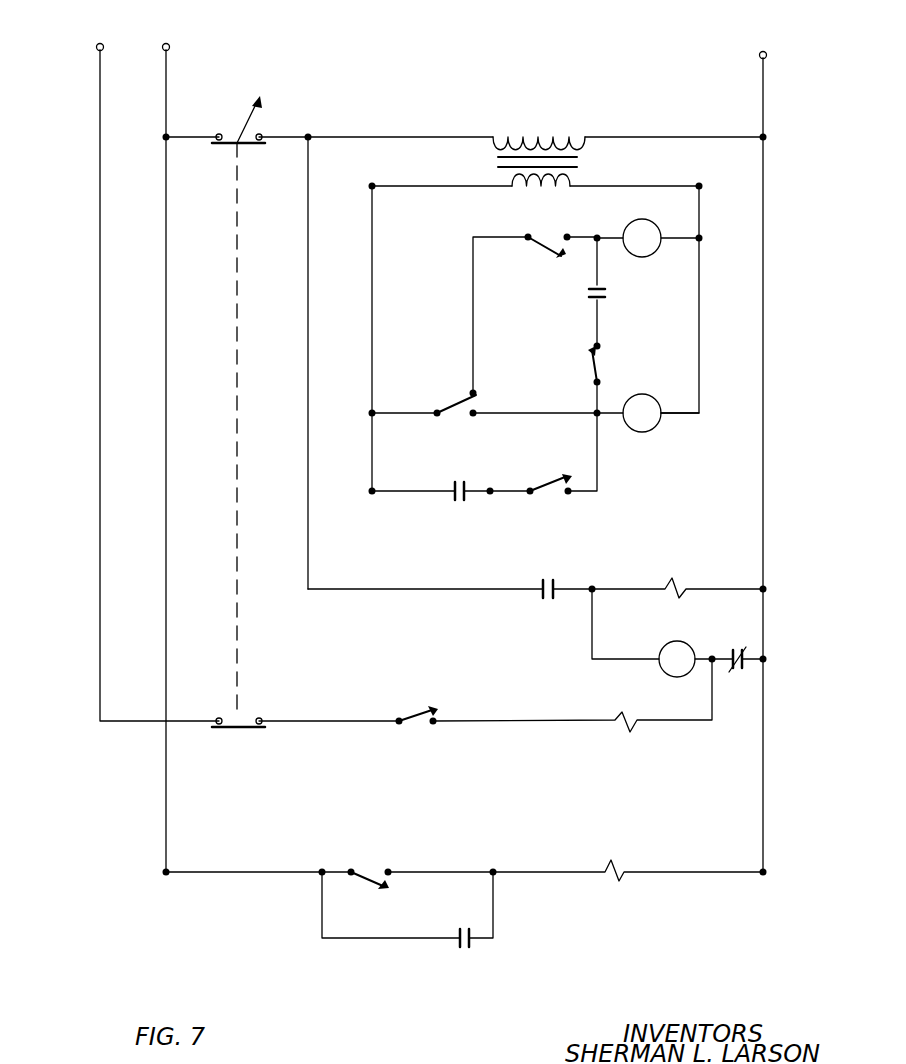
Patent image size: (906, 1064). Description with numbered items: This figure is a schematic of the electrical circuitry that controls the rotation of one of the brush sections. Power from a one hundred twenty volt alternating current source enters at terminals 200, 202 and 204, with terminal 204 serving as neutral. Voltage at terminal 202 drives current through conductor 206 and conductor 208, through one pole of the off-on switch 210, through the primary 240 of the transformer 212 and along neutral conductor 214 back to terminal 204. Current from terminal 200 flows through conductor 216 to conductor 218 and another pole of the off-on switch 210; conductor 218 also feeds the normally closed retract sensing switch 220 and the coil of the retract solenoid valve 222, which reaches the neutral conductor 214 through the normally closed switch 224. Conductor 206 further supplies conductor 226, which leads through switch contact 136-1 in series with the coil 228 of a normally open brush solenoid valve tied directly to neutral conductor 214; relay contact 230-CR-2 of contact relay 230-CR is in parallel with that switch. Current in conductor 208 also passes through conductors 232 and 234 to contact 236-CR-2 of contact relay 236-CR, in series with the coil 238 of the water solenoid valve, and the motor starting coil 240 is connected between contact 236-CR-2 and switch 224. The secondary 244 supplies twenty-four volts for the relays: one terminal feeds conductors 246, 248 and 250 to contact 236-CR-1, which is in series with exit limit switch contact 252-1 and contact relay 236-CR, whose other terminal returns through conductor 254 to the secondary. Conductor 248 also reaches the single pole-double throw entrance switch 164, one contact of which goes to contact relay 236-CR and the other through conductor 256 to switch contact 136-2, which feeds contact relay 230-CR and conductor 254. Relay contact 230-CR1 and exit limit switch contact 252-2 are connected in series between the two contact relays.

The terminal 200 is at (108, 30).
The terminal 202 is at (166, 43).
The neutral terminal 204 is at (764, 51).
The conductor 206 is at (168, 216).
The conductor 208 is at (352, 137).
The off-on switch 210 is at (231, 136).
The transformer 212 is at (578, 164).
The neutral conductor 214 is at (765, 246).
The conductor 216 is at (100, 450).
The conductor 218 is at (340, 692).
The retract sensing switch 220 is at (405, 716).
The retract solenoid valve 222 is at (618, 712).
The normally closed switch 224 is at (735, 655).
The conductor 226 is at (212, 870).
The coil 228 is at (611, 860).
The contact relay 230-CR is at (626, 248).
The relay contact 230-CR1 is at (603, 292).
The relay contact 230-CR-2 is at (472, 944).
The conductor 232 is at (300, 348).
The conductor 234 is at (402, 588).
The contact relay 236-CR is at (652, 428).
The relay contact 236-CR-1 is at (450, 484).
The relay contact 236-CR-2 is at (575, 562).
The coil 238 is at (672, 578).
The primary / starting coil 240 is at (540, 135).
The secondary 244 is at (525, 195).
The conductor 246 is at (386, 187).
The conductor 248 is at (374, 292).
The conductor 250 is at (382, 492).
The exit limit switch contact 252-1 is at (548, 482).
The exit limit switch contact 252-2 is at (594, 356).
The conductor 254 is at (700, 316).
The conductor 256 is at (475, 318).
The switch contact 136-1 is at (366, 870).
The switch contact 136-2 is at (538, 245).
The entrance switch 164 is at (462, 396).